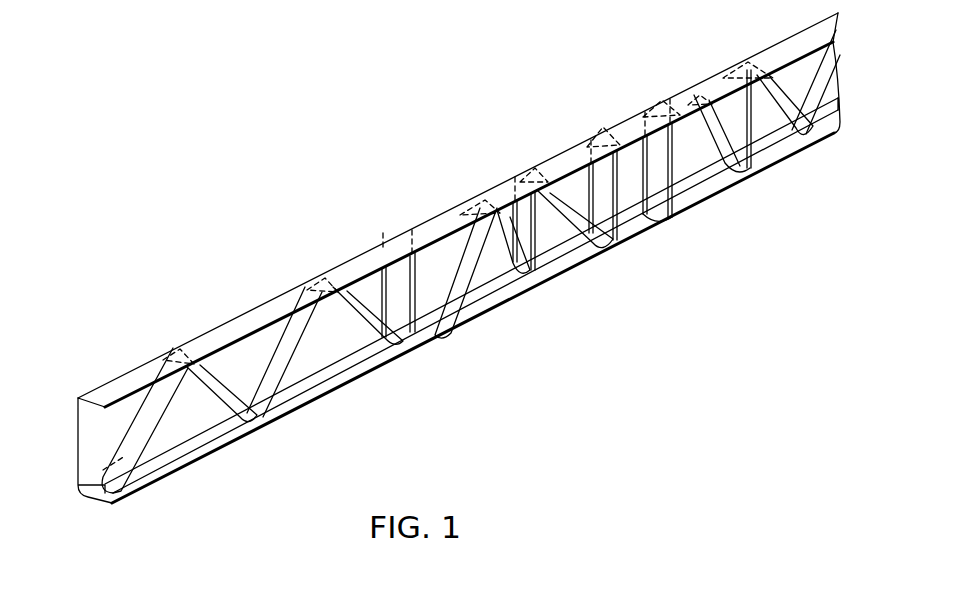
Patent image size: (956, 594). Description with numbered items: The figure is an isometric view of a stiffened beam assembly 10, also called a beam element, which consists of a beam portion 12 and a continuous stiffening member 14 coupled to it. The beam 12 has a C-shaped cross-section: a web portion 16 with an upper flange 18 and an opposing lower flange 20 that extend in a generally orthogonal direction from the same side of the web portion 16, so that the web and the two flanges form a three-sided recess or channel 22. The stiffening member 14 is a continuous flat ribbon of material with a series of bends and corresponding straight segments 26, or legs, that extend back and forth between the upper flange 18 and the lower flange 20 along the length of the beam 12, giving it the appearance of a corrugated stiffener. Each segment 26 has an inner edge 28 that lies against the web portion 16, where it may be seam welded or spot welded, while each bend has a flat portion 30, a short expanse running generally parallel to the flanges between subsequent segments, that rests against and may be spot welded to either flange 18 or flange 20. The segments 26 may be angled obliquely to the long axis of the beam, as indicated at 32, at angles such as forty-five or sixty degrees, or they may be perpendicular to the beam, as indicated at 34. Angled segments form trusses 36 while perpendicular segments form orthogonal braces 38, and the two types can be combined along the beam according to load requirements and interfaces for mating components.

The beam assembly 10 is at (201, 250).
The beam portion 12 is at (74, 452).
The continuous stiffening member 14 is at (445, 292).
The web portion 16 is at (187, 418).
The upper flange 18 is at (247, 328).
The lower flange 20 is at (243, 440).
The channel 22 is at (540, 228).
The straight segments 26 is at (130, 440).
The inner edge 28 is at (124, 404).
The flat portion 30 is at (95, 496).
The angled orientation 32 is at (160, 450).
The perpendicular orientation 34 is at (420, 327).
The trusses 36 is at (198, 484).
The orthogonal braces 38 is at (364, 199).